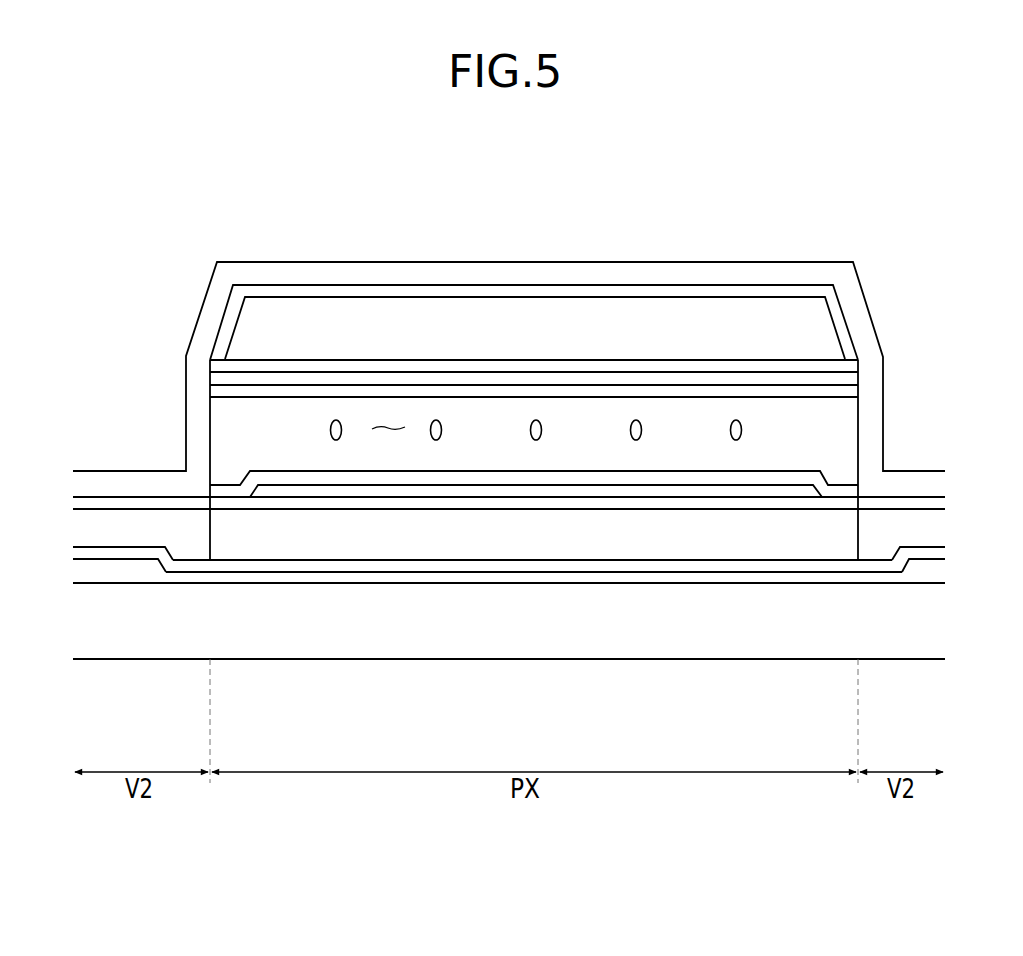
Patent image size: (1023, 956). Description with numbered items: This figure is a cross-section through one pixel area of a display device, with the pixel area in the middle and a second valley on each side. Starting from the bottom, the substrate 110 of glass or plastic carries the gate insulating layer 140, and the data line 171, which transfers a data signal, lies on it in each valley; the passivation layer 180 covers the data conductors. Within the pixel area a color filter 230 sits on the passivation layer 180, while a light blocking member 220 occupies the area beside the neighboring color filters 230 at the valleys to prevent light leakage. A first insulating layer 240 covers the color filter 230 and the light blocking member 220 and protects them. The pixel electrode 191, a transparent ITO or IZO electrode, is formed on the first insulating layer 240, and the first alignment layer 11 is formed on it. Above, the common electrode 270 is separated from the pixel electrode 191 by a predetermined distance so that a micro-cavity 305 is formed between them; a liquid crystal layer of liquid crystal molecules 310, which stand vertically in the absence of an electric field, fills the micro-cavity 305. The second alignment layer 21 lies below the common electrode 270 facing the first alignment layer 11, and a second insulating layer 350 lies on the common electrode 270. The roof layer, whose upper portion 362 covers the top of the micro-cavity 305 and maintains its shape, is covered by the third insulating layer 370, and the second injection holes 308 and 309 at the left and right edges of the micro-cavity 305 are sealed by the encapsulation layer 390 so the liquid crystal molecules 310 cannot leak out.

The first alignment layer 11 is at (392, 478).
The second alignment layer 21 is at (623, 390).
The substrate 110 is at (560, 625).
The gate insulating layer 140 is at (622, 577).
The data line 171 is at (110, 567).
The passivation layer 180 is at (685, 565).
The pixel electrode 191 is at (323, 490).
The light blocking member 220 is at (880, 540).
The color filter 230 is at (257, 540).
The first insulating layer 240 is at (138, 503).
The common electrode 270 is at (693, 380).
The micro-cavity 305 is at (387, 427).
The second injection hole 308 is at (199, 430).
The second injection hole 309 is at (858, 422).
The liquid crystal molecules 310 is at (442, 429).
The second insulating layer 350 is at (317, 367).
The upper portion 362 is at (775, 322).
The third insulating layer 370 is at (492, 292).
The encapsulation layer 390 is at (547, 270).